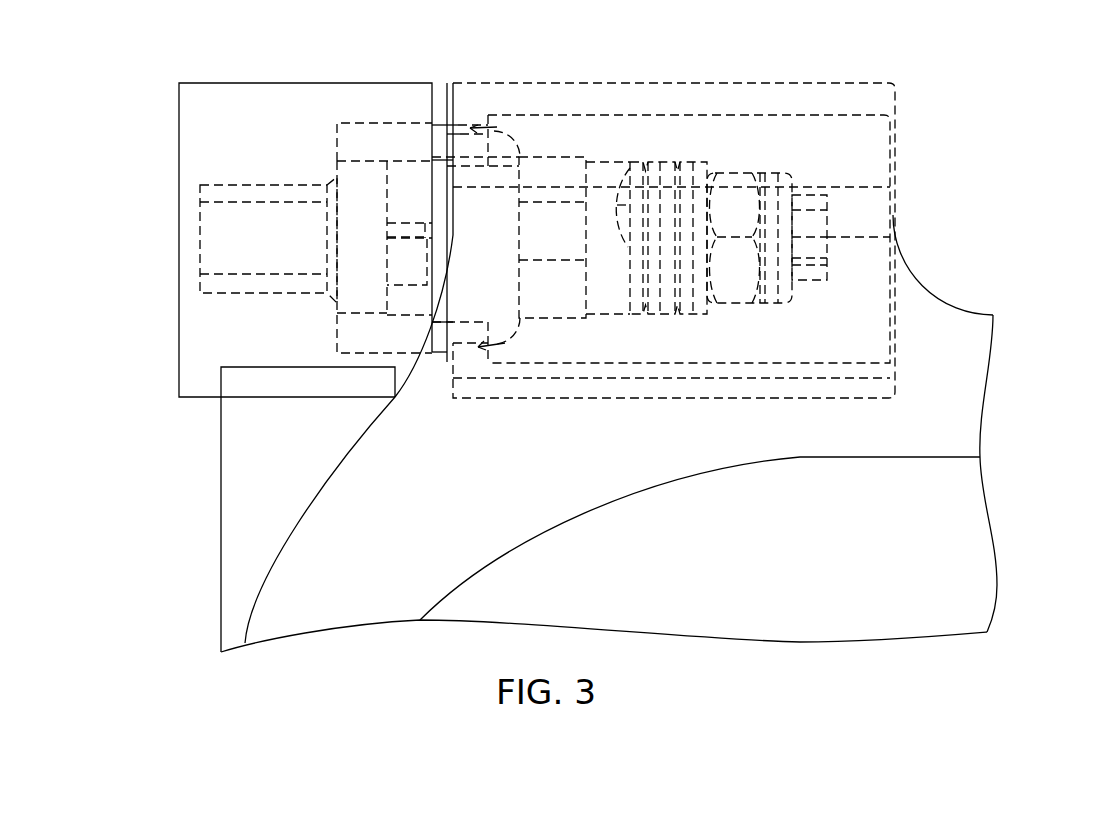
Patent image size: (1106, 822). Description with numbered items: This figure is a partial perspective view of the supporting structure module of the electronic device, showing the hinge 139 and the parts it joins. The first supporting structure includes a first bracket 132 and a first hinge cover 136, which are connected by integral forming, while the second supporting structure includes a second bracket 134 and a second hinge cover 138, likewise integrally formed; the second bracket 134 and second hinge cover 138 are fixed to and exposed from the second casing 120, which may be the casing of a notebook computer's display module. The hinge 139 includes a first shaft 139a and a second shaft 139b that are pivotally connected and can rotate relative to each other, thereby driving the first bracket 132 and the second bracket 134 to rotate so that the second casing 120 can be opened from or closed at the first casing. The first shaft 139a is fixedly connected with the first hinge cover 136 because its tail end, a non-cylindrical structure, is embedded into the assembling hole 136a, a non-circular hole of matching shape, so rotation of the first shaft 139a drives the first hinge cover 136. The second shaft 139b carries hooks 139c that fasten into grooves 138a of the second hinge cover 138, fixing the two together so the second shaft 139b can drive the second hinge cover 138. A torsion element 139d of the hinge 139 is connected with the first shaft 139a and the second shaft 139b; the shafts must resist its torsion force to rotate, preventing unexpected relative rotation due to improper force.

The second casing 120 is at (987, 532).
The first bracket 132 is at (230, 477).
The second bracket 134 is at (950, 317).
The first hinge cover 136 is at (250, 96).
The assembling hole 136a is at (228, 283).
The second hinge cover 138 is at (842, 98).
The groove 138a is at (497, 122).
The hinge 139 is at (518, 107).
The first shaft 139a is at (364, 232).
The second shaft 139b is at (563, 168).
The hook 139c is at (436, 133).
The torsion element 139d is at (687, 163).